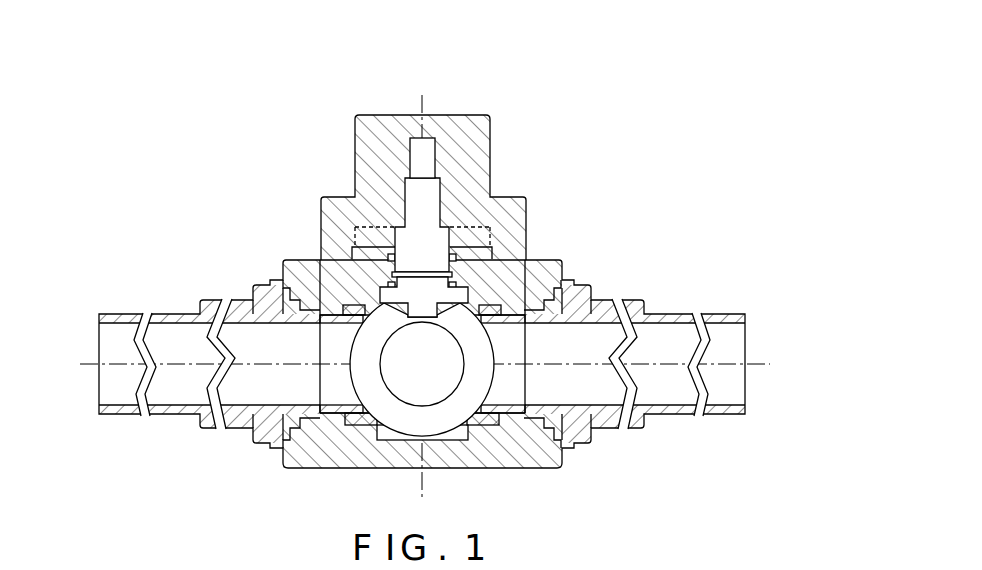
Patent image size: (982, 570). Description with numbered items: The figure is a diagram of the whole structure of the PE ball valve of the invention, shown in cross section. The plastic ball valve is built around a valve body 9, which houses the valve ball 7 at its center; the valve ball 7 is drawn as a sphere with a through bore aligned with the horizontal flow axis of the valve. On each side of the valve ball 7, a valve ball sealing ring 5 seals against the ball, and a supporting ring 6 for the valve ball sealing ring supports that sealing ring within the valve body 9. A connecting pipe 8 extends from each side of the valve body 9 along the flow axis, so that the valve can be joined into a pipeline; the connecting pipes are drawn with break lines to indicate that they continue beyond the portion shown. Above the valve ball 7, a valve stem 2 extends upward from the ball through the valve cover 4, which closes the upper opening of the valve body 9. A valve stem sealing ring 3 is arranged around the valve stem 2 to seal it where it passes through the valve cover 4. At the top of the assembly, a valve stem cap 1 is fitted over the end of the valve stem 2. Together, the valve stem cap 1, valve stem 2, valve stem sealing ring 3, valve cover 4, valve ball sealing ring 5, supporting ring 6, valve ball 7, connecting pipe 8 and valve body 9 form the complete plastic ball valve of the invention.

The valve stem cap 1 is at (443, 160).
The valve stem 2 is at (430, 197).
The valve stem sealing ring 3 is at (510, 270).
The valve cover 4 is at (513, 300).
The valve ball sealing ring 5 is at (527, 317).
The supporting ring for the valve ball sealing ring 6 is at (590, 292).
The valve ball 7 is at (483, 388).
The connecting pipe 8 is at (746, 315).
The valve body 9 is at (566, 450).